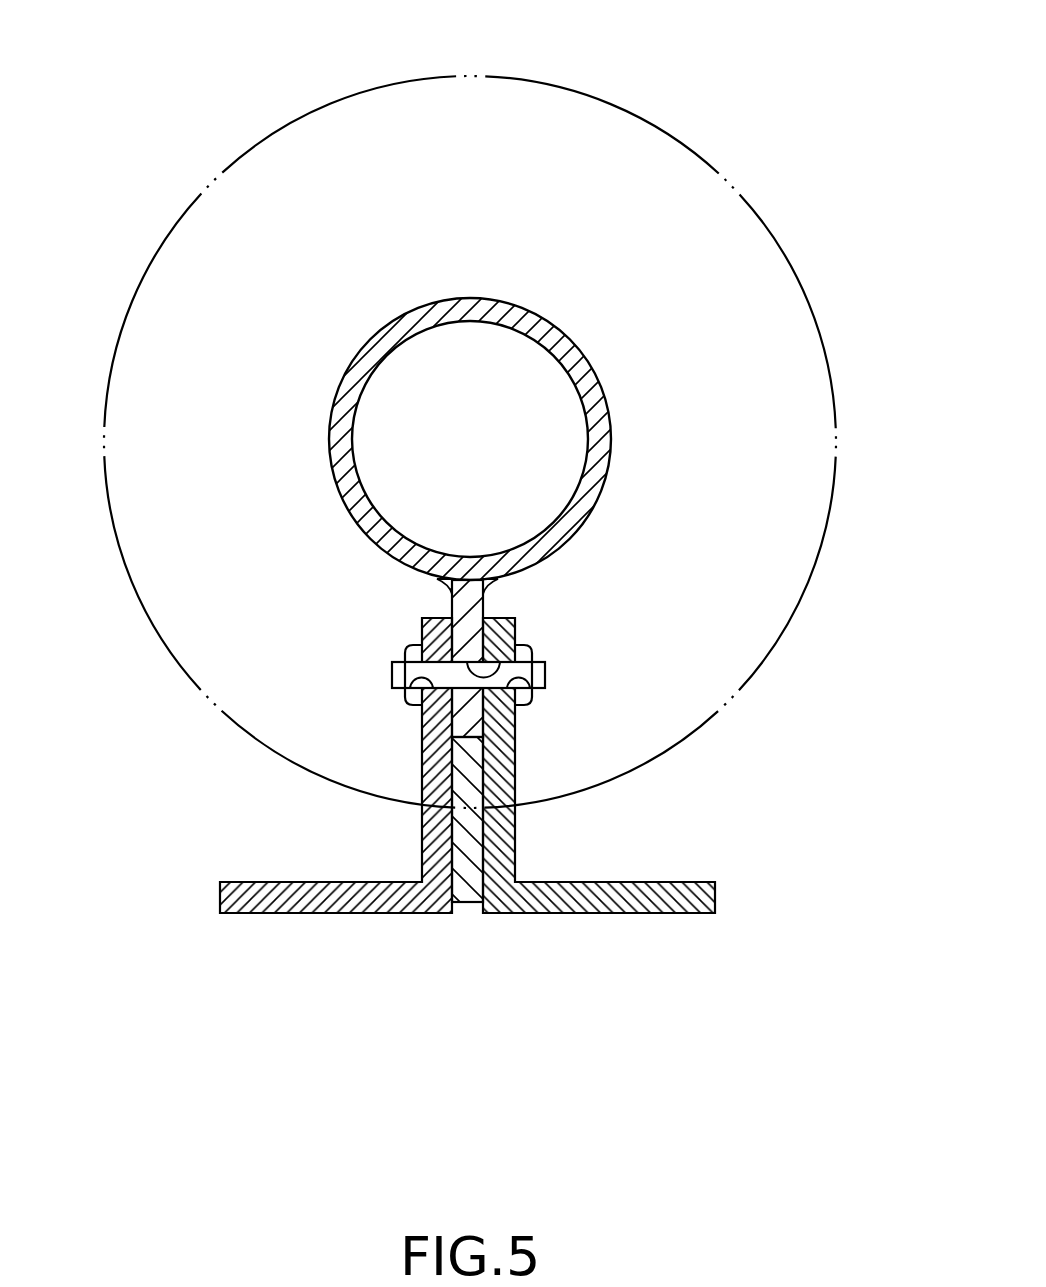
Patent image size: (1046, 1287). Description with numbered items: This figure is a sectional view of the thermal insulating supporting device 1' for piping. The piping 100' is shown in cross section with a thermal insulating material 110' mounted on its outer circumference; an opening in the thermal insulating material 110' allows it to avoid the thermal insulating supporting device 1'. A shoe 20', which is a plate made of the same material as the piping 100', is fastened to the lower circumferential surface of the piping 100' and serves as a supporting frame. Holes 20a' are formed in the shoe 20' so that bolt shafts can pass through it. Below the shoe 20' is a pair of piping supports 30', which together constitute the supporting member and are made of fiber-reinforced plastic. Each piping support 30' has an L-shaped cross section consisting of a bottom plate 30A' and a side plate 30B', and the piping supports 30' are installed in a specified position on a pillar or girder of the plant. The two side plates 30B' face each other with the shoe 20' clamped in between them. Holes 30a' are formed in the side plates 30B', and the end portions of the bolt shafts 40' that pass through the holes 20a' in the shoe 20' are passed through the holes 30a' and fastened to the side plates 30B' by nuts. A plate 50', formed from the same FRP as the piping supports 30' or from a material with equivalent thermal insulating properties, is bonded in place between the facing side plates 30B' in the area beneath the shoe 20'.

The thermal insulating material 110' is at (470, 406).
The piping 100' is at (470, 387).
The shoe 20' is at (548, 635).
The holes 20a' is at (548, 658).
The bolt shafts 40' is at (479, 666).
The holes 30a' is at (482, 689).
The thermal insulating supporting device 1' is at (475, 826).
The side plate 30B' is at (467, 765).
The bottom plate 30A' is at (475, 765).
The piping supports 30' is at (475, 826).
The plate 50' is at (468, 882).